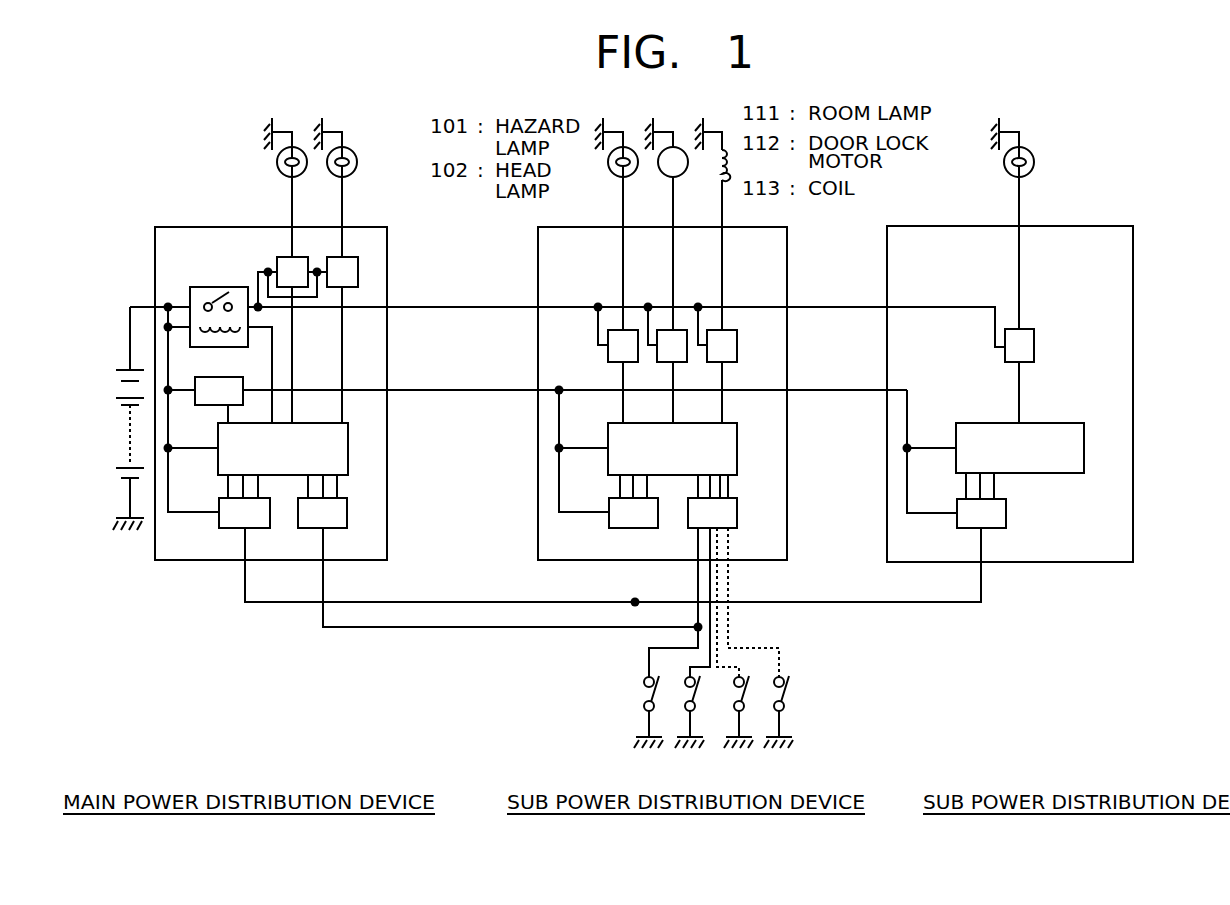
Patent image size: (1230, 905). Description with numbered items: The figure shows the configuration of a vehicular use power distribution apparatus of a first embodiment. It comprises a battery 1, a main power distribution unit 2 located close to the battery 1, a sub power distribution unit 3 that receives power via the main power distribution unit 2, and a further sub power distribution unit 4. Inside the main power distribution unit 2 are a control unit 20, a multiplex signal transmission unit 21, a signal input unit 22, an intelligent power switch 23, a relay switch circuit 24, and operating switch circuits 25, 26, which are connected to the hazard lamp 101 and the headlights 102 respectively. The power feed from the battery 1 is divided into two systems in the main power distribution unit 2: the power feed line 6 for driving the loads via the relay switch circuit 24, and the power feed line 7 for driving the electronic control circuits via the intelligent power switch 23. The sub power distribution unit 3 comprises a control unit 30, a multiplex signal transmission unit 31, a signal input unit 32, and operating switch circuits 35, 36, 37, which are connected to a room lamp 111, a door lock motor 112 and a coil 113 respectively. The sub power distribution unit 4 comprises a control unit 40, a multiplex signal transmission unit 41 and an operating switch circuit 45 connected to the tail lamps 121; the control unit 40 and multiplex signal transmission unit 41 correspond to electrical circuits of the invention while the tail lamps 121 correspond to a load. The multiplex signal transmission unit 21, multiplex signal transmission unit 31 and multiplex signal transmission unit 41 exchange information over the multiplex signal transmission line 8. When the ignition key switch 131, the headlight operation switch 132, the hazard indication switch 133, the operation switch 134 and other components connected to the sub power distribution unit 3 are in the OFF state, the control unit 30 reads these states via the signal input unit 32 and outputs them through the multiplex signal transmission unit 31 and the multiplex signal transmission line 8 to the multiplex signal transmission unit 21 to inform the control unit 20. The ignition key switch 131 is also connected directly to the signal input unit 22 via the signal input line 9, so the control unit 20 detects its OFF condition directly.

The battery 1 is at (123, 418).
The main power distribution unit 2 is at (288, 378).
The sub power distribution unit 3 is at (681, 384).
The sub power distribution unit 4 is at (1028, 385).
The power feed line 6 is at (631, 298).
The power feed line 7 is at (575, 361).
The multiplex signal transmission line 8 is at (613, 565).
The signal input line 9 is at (510, 606).
The control unit 20 is at (296, 430).
The multiplex signal transmission unit 21 is at (223, 493).
The signal input unit 22 is at (340, 498).
The intelligent power switch 23 is at (231, 376).
The relay switch circuit 24 is at (219, 291).
The operating switch circuit 25 is at (271, 260).
The operating switch circuit 26 is at (355, 260).
The control unit 30 is at (686, 433).
The multiplex signal transmission unit 31 is at (612, 494).
The signal input unit 32 is at (729, 499).
The operating switch circuit 35 is at (601, 355).
The operating switch circuit 36 is at (686, 357).
The operating switch circuit 37 is at (736, 357).
The control unit 40 is at (1034, 435).
The multiplex signal transmission unit 41 is at (960, 494).
The operating switch circuit 45 is at (1042, 341).
The hazard lamp 101 is at (256, 147).
The headlights 102 is at (368, 147).
The room lamp 111 is at (600, 166).
The door lock motor 112 is at (659, 166).
The coil 113 is at (705, 166).
The tail lamps 121 is at (1078, 136).
The ignition key switch 131 is at (635, 702).
The headlight operation switch 132 is at (705, 712).
The hazard indication switch 133 is at (752, 702).
The operation switch 134 is at (796, 702).